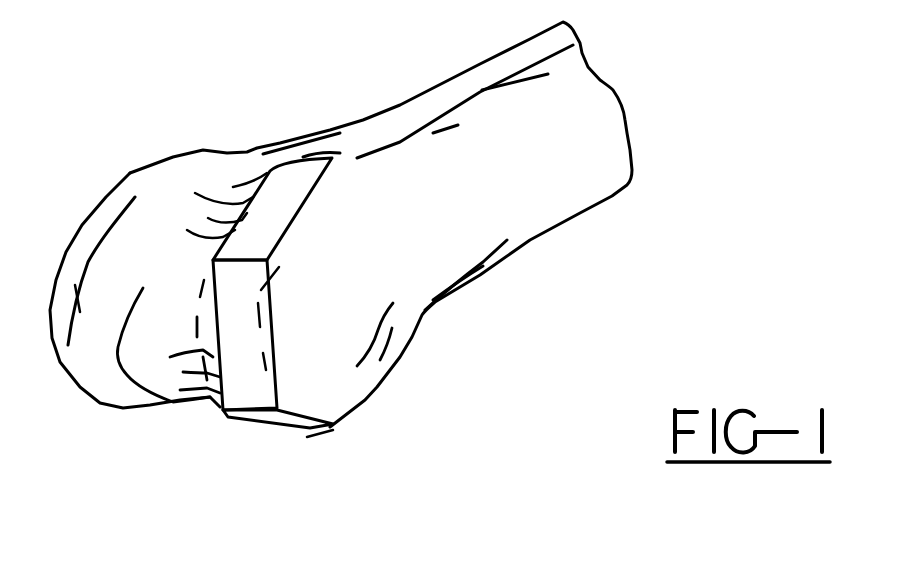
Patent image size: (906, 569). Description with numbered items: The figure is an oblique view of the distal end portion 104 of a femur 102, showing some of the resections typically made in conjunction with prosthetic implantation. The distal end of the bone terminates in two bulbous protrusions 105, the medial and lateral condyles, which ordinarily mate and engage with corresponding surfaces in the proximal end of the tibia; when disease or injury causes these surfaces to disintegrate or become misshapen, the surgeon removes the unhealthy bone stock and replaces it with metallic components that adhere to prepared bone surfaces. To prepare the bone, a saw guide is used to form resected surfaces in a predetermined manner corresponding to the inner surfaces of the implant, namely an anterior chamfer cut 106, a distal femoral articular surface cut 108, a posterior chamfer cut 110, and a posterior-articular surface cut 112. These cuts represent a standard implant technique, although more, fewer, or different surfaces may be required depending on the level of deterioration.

The femur 102 is at (567, 177).
The distal end portion 104 is at (195, 119).
The bulbous protrusions 105 is at (257, 438).
The anterior chamfer cut 106 is at (295, 178).
The distal femoral articular surface cut 108 is at (233, 330).
The posterior chamfer cut 110 is at (287, 423).
The posterior-articular surface cut 112 is at (367, 400).